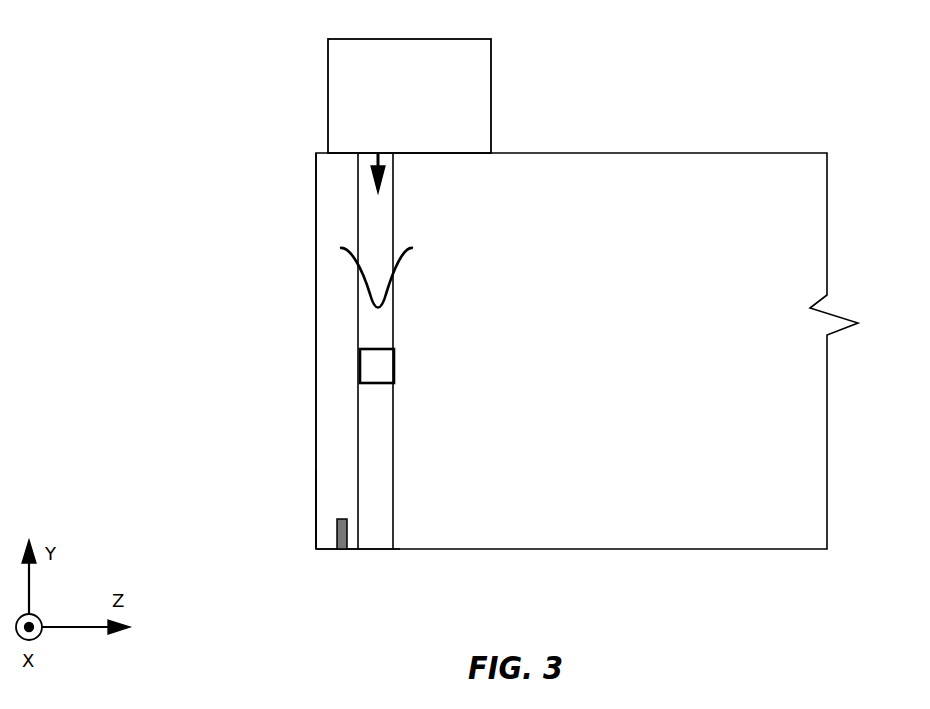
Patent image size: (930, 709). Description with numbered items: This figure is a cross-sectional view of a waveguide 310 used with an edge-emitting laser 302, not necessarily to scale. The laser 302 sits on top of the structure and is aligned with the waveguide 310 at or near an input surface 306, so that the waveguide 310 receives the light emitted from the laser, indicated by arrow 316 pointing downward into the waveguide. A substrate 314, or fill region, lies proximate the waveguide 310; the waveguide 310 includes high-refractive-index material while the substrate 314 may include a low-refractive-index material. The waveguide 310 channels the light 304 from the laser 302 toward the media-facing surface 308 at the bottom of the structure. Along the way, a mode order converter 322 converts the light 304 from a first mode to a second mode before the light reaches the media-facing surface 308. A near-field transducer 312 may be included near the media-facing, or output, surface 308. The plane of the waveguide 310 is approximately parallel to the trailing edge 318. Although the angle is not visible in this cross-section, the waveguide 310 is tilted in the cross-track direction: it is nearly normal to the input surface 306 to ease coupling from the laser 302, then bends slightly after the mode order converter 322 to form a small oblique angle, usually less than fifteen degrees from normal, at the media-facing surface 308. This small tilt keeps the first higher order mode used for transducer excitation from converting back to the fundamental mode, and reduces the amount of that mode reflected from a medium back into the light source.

The edge-emitting laser 302 is at (443, 38).
The light 304 is at (396, 273).
The input surface 306 is at (316, 152).
The media-facing surface 308 is at (320, 551).
The waveguide 310 is at (373, 486).
The near-field transducer 312 is at (342, 552).
The substrate 314 is at (343, 345).
The arrow indicating light emitted from the laser 316 is at (372, 180).
The trailing edge 318 is at (313, 508).
The mode order converter 322 is at (383, 370).